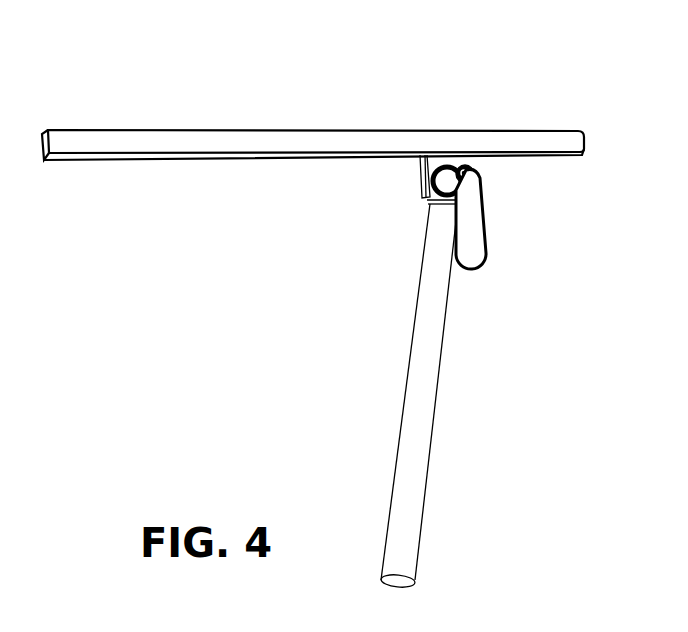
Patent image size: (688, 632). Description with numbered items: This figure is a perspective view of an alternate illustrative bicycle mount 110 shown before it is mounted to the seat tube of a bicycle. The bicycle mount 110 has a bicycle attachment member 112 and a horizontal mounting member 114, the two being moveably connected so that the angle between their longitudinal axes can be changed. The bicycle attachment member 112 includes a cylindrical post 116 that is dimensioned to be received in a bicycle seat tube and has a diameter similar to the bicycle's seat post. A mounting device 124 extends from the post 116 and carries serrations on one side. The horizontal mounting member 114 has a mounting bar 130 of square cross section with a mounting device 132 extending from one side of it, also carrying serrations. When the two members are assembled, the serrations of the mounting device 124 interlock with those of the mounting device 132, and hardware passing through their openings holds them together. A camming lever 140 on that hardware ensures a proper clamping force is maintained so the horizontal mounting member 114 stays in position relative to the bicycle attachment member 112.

The bicycle mount 110 is at (560, 78).
The bicycle attachment member 112 is at (405, 315).
The horizontal mounting member 114 is at (293, 118).
The cylindrical post 116 is at (432, 422).
The mounting device 124 is at (427, 202).
The mounting bar 130 is at (137, 138).
The mounting device 132 is at (420, 170).
The camming lever 140 is at (488, 248).